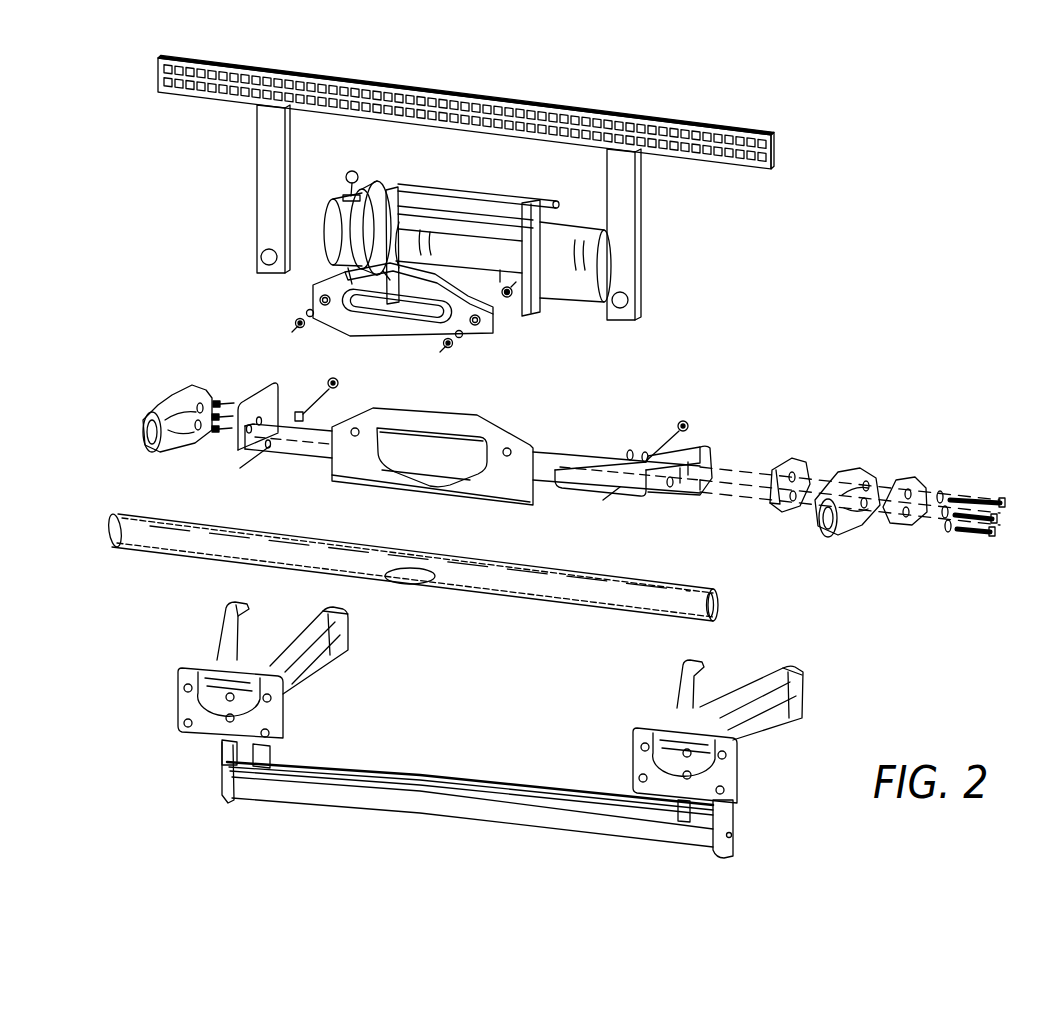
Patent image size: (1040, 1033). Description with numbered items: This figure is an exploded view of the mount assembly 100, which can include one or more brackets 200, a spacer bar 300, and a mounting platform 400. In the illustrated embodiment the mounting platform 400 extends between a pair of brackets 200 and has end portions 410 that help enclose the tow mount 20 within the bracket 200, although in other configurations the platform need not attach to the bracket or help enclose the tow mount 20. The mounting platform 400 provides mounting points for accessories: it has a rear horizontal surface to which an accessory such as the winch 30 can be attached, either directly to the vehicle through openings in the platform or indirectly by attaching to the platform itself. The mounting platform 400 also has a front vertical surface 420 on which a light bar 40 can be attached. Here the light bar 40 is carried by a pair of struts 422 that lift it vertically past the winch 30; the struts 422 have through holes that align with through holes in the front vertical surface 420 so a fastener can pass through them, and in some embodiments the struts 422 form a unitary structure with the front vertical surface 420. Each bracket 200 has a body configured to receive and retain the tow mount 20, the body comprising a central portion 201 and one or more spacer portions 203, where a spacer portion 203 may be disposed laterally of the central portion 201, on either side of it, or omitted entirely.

The tow mount 20 is at (222, 625).
The winch 30 is at (378, 190).
The light bar 40 is at (688, 107).
The mount assembly 100 is at (750, 399).
The bracket 200 is at (141, 398).
The central portion 201 is at (865, 478).
The spacer portion 203 is at (795, 470).
The spacer bar 300 is at (148, 532).
The mounting platform 400 is at (590, 458).
The end portions 410 is at (248, 400).
The front vertical surface 420 is at (578, 487).
The struts 422 is at (265, 222).